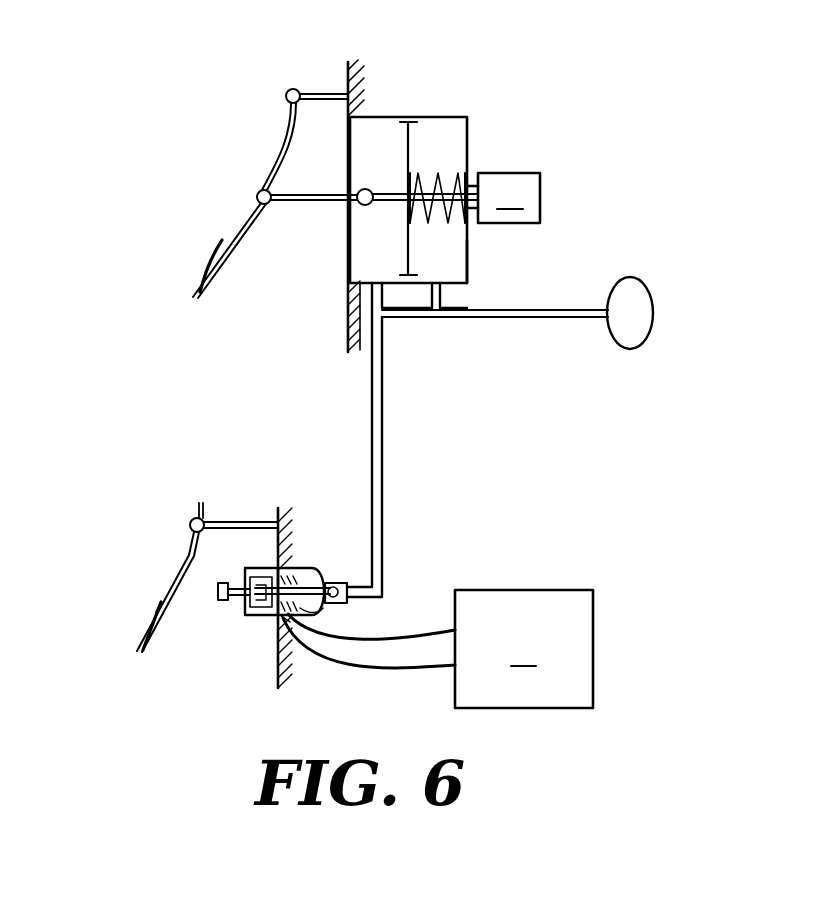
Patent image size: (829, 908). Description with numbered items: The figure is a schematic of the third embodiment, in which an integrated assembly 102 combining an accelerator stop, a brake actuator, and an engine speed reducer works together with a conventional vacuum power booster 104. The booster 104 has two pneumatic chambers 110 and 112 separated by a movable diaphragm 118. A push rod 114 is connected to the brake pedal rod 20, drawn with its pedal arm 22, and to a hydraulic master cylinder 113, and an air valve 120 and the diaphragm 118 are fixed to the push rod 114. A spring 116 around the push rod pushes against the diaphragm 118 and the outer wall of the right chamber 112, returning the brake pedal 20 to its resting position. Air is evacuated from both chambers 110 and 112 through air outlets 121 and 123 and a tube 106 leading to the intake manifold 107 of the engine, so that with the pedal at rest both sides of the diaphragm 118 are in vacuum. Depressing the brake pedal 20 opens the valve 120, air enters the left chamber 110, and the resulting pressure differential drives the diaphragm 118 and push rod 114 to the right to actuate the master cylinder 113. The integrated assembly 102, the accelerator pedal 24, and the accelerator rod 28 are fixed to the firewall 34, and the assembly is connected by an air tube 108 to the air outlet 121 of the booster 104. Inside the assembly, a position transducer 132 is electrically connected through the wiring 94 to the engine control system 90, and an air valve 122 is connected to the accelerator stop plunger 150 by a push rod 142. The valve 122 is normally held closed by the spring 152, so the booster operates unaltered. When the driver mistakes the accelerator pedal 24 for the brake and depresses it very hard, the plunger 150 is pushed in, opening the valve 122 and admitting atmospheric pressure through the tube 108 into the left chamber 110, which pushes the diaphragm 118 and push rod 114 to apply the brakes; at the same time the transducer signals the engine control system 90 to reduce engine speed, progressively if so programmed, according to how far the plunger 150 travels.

The brake pedal rod 20 is at (210, 284).
The accelerator pedal arm 22 is at (284, 148).
The accelerator pedal 24 is at (150, 638).
The accelerator rod 28 is at (190, 548).
The firewall 34 is at (348, 334).
The engine control system 90 is at (524, 649).
The electrical cables 94 is at (455, 641).
The integrated assembly 102 is at (253, 556).
The vacuum power booster 104 is at (421, 94).
The tube 106 is at (538, 316).
The intake manifold 107 is at (630, 308).
The air tube 108 is at (382, 485).
The left pneumatic chamber 110 is at (360, 262).
The right pneumatic chamber 112 is at (450, 268).
The hydraulic master cylinder 113 is at (509, 198).
The push rod 114 is at (470, 216).
The spring 116 is at (440, 175).
The movable diaphragm 118 is at (413, 147).
The air valve 120 is at (363, 210).
The air outlet 121 is at (375, 293).
The air valve 122 is at (335, 583).
The air outlet 123 is at (440, 293).
The position transducer 132 is at (280, 619).
The push rod 142 is at (320, 612).
The accelerator stop plunger 150 is at (236, 600).
The spring 152 is at (236, 603).